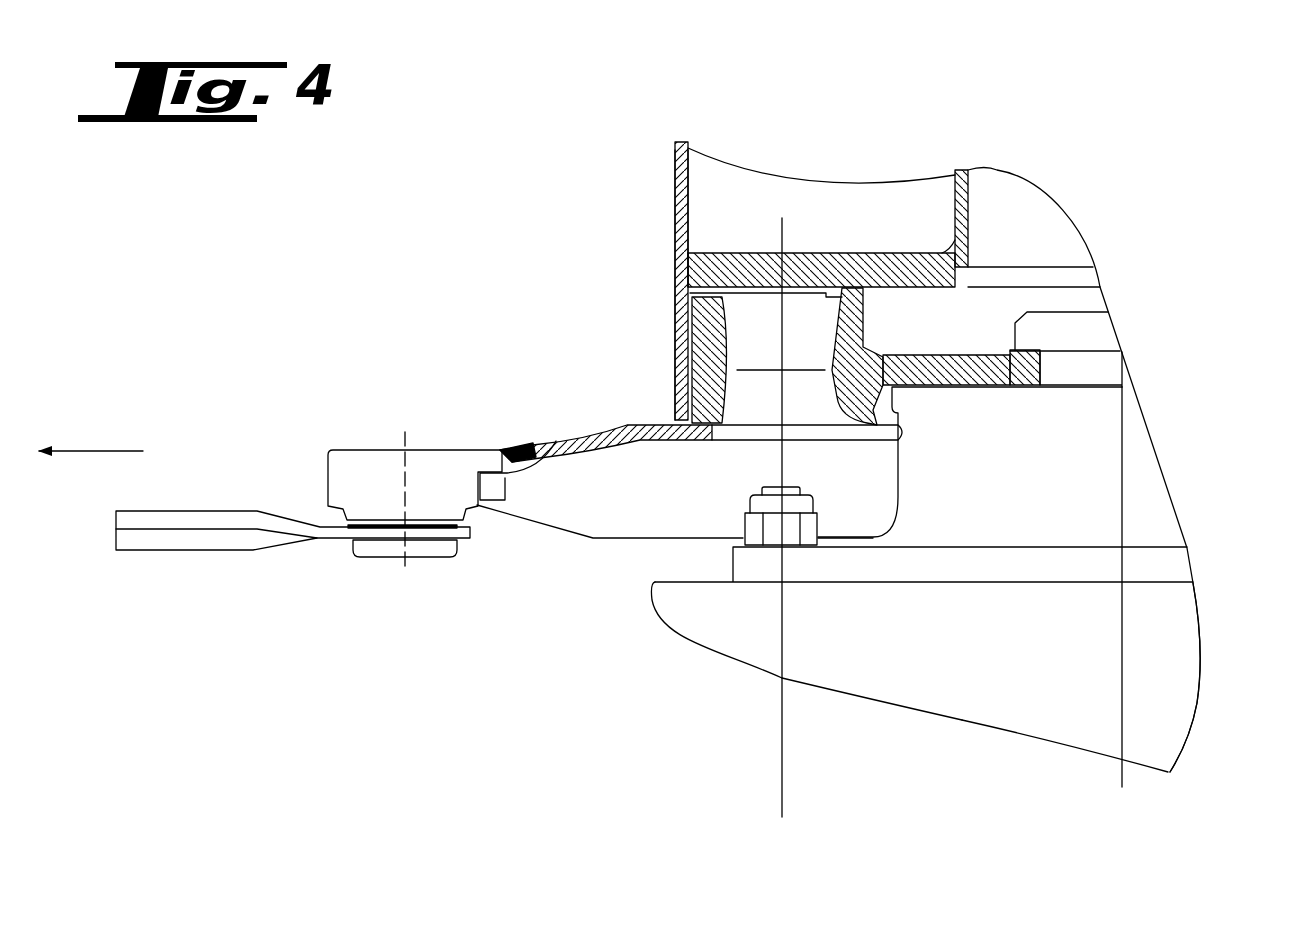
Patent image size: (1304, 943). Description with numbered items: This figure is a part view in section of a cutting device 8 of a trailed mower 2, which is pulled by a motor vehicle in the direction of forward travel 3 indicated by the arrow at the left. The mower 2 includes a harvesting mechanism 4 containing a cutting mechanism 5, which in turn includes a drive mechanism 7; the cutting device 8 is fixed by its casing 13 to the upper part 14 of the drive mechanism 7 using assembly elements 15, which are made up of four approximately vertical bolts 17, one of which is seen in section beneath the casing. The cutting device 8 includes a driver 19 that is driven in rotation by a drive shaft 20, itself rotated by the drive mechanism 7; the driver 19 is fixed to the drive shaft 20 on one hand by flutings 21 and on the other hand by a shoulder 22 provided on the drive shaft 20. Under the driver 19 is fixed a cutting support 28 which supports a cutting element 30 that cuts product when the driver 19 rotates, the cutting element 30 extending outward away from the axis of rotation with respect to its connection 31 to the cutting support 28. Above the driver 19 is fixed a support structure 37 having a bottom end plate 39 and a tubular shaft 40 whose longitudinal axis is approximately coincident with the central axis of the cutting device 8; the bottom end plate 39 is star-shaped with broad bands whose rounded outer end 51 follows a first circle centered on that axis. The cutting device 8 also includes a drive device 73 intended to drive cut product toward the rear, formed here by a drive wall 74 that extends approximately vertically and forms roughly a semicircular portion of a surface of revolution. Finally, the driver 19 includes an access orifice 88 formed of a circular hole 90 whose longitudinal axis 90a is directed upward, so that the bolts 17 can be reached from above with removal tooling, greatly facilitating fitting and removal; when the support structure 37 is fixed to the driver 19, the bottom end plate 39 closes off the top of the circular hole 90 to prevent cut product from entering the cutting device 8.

The mower 2 is at (1141, 771).
The direction of forward travel 3 is at (97, 451).
The harvesting mechanism 4 is at (901, 710).
The cutting mechanism 5 is at (853, 667).
The drive mechanism 7 is at (975, 692).
The cutting device 8 is at (672, 147).
The casing 13 is at (1042, 504).
The upper part 14 is at (1042, 748).
The assembly elements 15 is at (767, 548).
The bolts 17 is at (810, 532).
The driver 19 is at (966, 380).
The drive shaft 20 is at (1100, 338).
The flutings 21 is at (1040, 378).
The shoulder 22 is at (1073, 317).
The cutting support 28 is at (567, 431).
The cutting element 30 is at (163, 537).
The connection 31 is at (387, 556).
The support structure 37 is at (950, 178).
The bottom end plate 39 is at (703, 265).
The tubular shaft 40 is at (960, 207).
The outer end 51 is at (687, 272).
The drive device 73 is at (672, 187).
The drive wall 74 is at (673, 215).
The access orifice 88 is at (802, 332).
The circular hole 90 is at (753, 342).
The longitudinal axis 90a is at (782, 817).